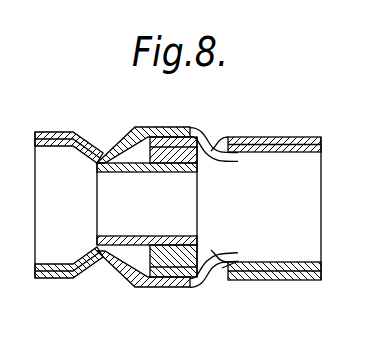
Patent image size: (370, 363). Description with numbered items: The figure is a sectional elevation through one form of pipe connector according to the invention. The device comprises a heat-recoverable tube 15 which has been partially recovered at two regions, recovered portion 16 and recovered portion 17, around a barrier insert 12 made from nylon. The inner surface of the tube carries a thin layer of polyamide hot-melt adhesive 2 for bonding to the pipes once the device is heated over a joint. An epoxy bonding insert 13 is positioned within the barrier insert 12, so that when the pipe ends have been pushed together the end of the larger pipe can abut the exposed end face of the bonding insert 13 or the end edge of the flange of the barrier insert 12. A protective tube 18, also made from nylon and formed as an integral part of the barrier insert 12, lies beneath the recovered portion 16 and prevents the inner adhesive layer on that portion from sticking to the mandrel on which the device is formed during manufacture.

The polyamide hot-melt adhesive 2 is at (272, 151).
The barrier insert 12 is at (173, 278).
The bonding insert 13 is at (222, 270).
The tube 15 is at (290, 137).
The recovered portion 16 is at (122, 152).
The recovered portion 17 is at (221, 143).
The protective tube 18 is at (95, 146).